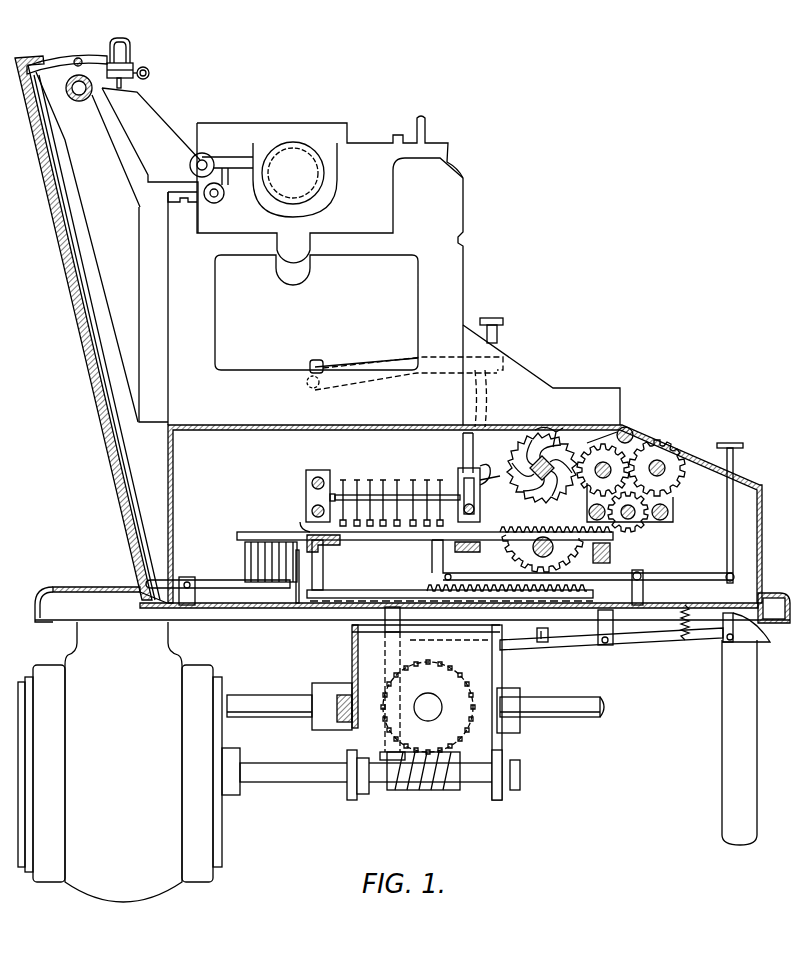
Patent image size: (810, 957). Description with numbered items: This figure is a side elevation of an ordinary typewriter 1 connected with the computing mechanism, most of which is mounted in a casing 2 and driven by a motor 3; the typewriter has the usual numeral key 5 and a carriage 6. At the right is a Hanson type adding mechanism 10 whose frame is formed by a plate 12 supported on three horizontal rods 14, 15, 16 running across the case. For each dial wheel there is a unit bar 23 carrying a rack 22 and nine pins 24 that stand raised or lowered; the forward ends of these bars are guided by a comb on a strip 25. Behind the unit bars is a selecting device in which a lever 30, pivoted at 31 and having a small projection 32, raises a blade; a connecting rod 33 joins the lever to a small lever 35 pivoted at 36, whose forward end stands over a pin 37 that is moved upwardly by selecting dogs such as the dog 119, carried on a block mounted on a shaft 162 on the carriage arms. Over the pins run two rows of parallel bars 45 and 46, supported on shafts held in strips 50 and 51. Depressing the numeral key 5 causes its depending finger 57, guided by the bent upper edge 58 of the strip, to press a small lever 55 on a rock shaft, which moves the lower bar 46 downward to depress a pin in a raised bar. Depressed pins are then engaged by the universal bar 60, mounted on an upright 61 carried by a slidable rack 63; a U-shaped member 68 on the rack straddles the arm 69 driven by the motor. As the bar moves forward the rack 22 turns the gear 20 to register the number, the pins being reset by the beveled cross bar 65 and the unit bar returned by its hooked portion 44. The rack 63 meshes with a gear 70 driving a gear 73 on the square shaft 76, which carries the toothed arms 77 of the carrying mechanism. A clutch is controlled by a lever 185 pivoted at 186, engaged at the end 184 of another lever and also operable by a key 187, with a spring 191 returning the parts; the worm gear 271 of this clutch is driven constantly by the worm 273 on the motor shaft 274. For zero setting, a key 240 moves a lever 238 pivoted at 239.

The typewriter 1 is at (463, 270).
The casing 2 is at (173, 497).
The motor 3 is at (165, 762).
The numeral key 5 is at (503, 335).
The typewriter carriage 6 is at (175, 117).
The adding mechanism 10 is at (672, 442).
The plate 12 is at (674, 508).
The rod 14 is at (668, 516).
The rod 15 is at (598, 502).
The rod 16 is at (632, 430).
The gear 20 is at (245, 550).
The rack 22 is at (575, 532).
The unit bar 23 is at (488, 535).
The pins 24 is at (363, 540).
The strip 25 is at (610, 556).
The lever 30 is at (205, 582).
The pivot 31 is at (187, 575).
The projection 32 is at (307, 576).
The connecting rod 33 is at (128, 478).
The small lever 35 is at (52, 62).
The pivot 36 is at (79, 58).
The pin 37 is at (135, 70).
The hooked portion 44 is at (305, 538).
The upper parallel bar 45 is at (400, 480).
The lower parallel bar 46 is at (300, 525).
The strip 50 is at (330, 472).
The strip 51 is at (458, 476).
The small lever 55 is at (492, 471).
The depending finger 57 is at (483, 404).
The upper edge 58 is at (463, 450).
The universal bar 60 is at (323, 560).
The upright 61 is at (323, 578).
The slidable rack 63 is at (425, 588).
The cross bar 65 is at (470, 552).
The U-shaped member 68 is at (385, 625).
The arm 69 is at (352, 660).
The gear 70 is at (555, 555).
The gear 73 is at (590, 452).
The square shaft 76 is at (520, 446).
The toothed arm 77 is at (540, 428).
The selecting dog 119 is at (132, 58).
The shaft 162 is at (149, 73).
The lever end 184 is at (545, 642).
The lever 185 is at (578, 650).
The pivot 186 is at (615, 648).
The key 187 is at (754, 650).
The spring 191 is at (687, 644).
The lever 238 is at (632, 586).
The pivot 239 is at (645, 588).
The key 240 is at (737, 443).
The worm gear 271 is at (460, 752).
The worm 273 is at (445, 790).
The motor shaft 274 is at (320, 785).